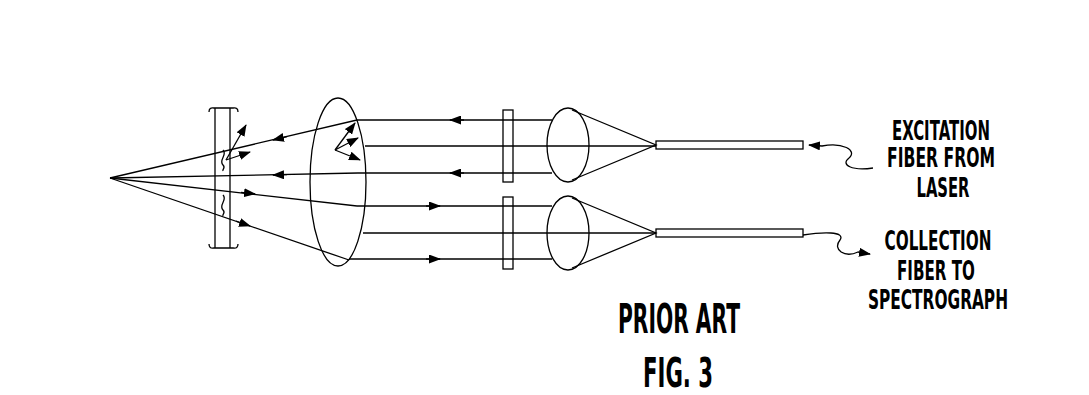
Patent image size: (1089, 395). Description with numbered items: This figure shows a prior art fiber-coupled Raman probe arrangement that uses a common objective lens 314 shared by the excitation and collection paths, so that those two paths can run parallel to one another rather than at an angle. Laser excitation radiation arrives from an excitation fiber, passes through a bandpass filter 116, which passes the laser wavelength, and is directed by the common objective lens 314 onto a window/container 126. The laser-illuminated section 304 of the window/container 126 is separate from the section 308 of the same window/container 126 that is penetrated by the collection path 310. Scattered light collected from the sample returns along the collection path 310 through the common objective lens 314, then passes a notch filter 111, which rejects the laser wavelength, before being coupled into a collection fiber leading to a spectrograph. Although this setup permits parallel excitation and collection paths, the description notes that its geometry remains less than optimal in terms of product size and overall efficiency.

The window/container 126 is at (221, 104).
The laser-illuminated section 304 is at (248, 168).
The section penetrated by the collection path 308 is at (218, 206).
The common objective lens 314 is at (326, 263).
The collection path 310 is at (448, 280).
The bandpass filter 116 is at (511, 112).
The notch filter 111 is at (500, 266).